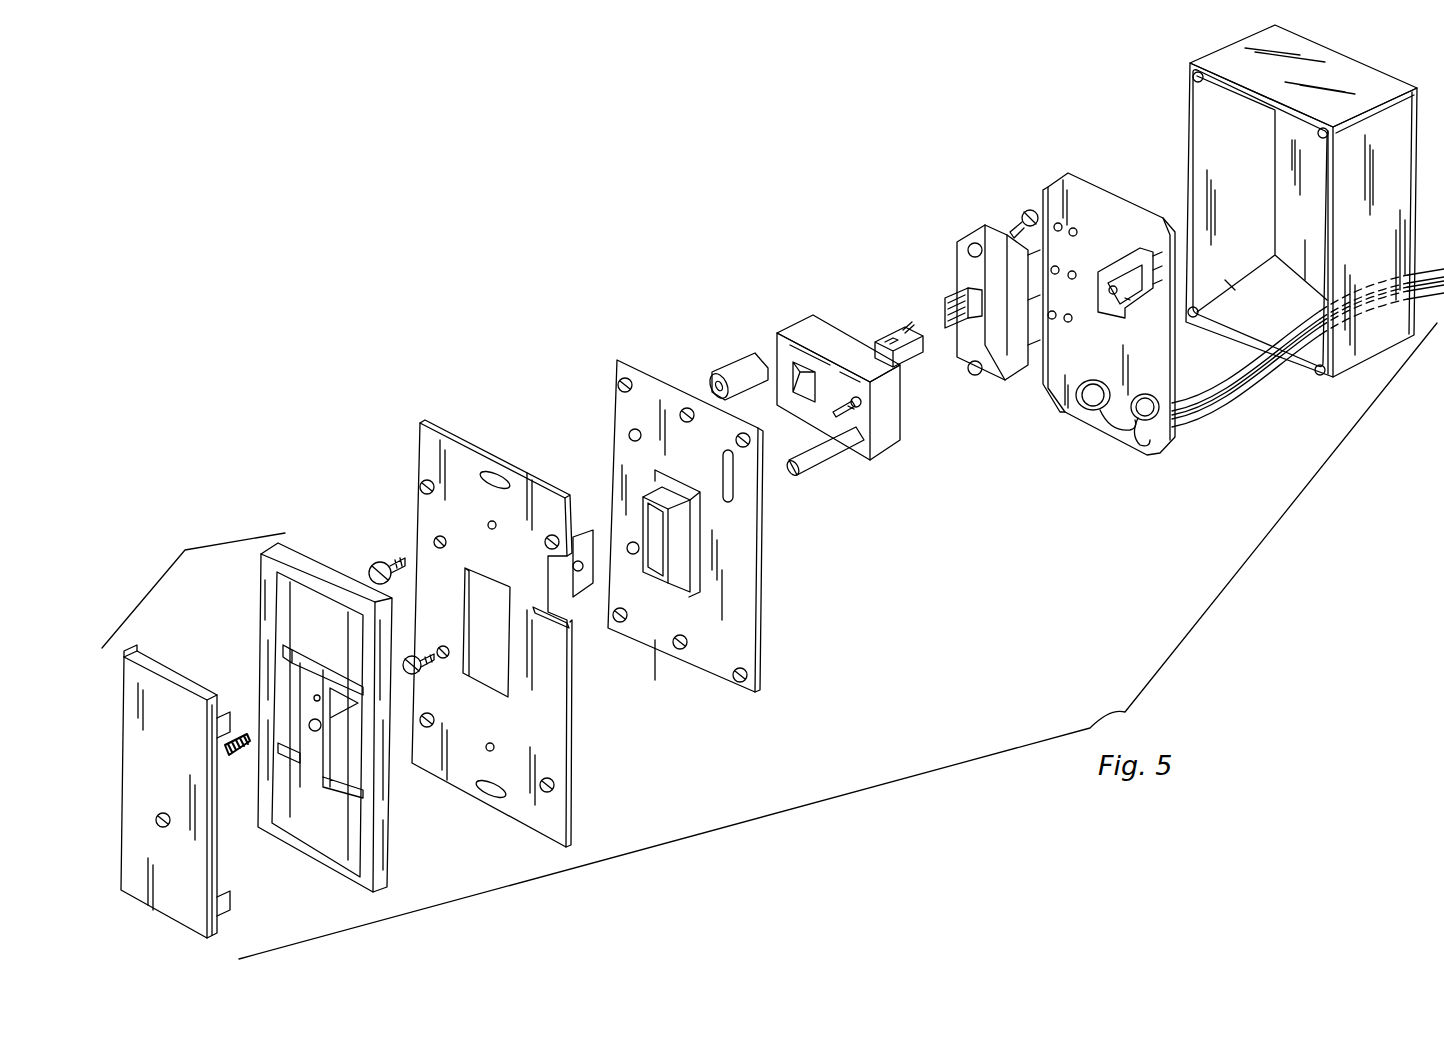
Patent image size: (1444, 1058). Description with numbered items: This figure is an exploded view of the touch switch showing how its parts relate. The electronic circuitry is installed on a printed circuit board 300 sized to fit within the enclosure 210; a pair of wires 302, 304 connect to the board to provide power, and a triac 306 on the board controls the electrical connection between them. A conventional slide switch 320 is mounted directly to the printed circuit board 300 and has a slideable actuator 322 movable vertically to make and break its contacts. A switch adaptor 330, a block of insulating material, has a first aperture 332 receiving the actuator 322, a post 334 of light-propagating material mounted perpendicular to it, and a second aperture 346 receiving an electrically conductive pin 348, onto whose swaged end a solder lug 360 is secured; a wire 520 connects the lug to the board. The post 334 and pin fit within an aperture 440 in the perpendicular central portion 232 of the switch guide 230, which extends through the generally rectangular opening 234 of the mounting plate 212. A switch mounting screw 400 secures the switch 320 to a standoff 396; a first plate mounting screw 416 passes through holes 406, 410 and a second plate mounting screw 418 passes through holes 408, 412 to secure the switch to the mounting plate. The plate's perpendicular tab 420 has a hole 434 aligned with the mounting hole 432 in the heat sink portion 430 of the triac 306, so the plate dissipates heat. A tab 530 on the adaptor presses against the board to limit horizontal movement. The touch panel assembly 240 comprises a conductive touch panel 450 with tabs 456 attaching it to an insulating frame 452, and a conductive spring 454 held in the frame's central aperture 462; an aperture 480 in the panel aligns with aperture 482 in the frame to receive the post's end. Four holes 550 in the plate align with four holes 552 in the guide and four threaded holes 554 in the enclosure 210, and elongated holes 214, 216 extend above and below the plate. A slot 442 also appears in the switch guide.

The enclosure 210 is at (1365, 80).
The mounting plate 212 is at (548, 705).
The elongated hole 214 is at (495, 477).
The elongated hole 216 is at (490, 792).
The switch guide 230 is at (750, 600).
The central portion 232 is at (680, 578).
The opening 234 is at (502, 600).
The touch panel assembly 240 is at (193, 585).
The printed circuit board 300 is at (1128, 164).
The wire 302 is at (1238, 402).
The wire 304 is at (1222, 380).
The triac 306 is at (1133, 298).
The slide switch 320 is at (960, 252).
The actuator 322 is at (952, 300).
The switch adaptor 330 is at (890, 450).
The first aperture 332 is at (798, 355).
The post 334 is at (830, 465).
The second aperture 346 is at (860, 402).
The pin 348 is at (850, 408).
The solder lug 360 is at (889, 340).
The standoff 396 is at (736, 365).
The switch mounting screw 400 is at (1022, 212).
The hole 406 is at (436, 540).
The hole 408 is at (443, 658).
The hole 410 is at (630, 432).
The hole 412 is at (634, 555).
The first plate mounting screw 416 is at (390, 562).
The second plate mounting screw 418 is at (424, 656).
The tab 420 is at (575, 592).
The heat sink portion 430 is at (1117, 266).
The mounting hole 432 is at (1113, 295).
The hole 434 is at (580, 530).
The aperture 440 is at (655, 535).
The slot 442 is at (735, 495).
The touch panel 450 is at (138, 860).
The touch panel frame 452 is at (382, 842).
The spring 454 is at (226, 747).
The tab 456 is at (222, 715).
The central aperture 462 is at (317, 695).
The aperture 480 is at (170, 826).
The aperture 482 is at (317, 731).
The wire 520 is at (906, 325).
The tab 530 is at (918, 355).
The holes 550 is at (422, 486).
The holes 552 is at (621, 380).
The threaded holes 554 is at (1318, 134).